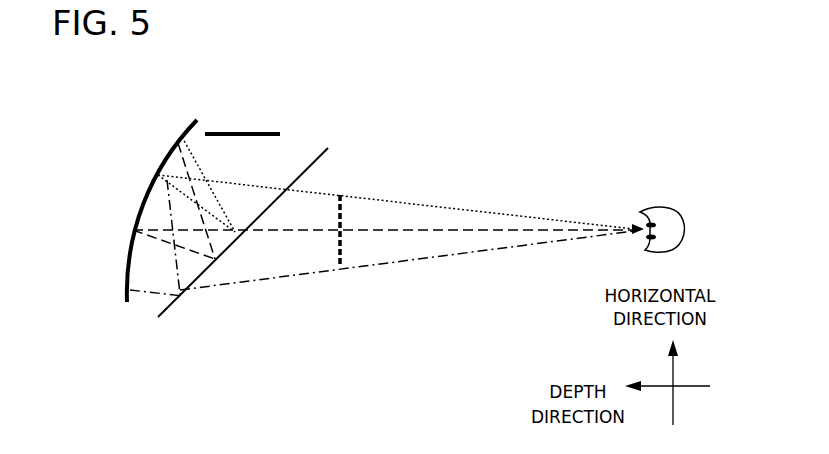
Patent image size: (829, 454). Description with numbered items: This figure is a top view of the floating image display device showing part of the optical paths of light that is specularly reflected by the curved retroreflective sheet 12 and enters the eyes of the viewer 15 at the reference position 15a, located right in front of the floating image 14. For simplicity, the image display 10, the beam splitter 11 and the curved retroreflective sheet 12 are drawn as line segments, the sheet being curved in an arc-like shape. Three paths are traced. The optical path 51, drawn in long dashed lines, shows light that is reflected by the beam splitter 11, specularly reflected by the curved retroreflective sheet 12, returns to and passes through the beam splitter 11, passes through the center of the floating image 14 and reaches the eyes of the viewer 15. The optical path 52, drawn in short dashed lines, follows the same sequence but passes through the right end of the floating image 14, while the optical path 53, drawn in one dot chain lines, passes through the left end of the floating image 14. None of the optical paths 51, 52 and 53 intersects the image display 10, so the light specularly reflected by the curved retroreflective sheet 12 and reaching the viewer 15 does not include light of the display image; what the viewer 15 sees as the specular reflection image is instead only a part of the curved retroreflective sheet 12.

The image display 10 is at (230, 133).
The beam splitter 11 is at (318, 148).
The curved retroreflective sheet 12 is at (148, 197).
The floating image 14 is at (340, 195).
The viewer 15 is at (663, 212).
The reference position 15a is at (640, 212).
The optical path 51 is at (402, 232).
The optical path 52 is at (418, 200).
The optical path 53 is at (490, 248).